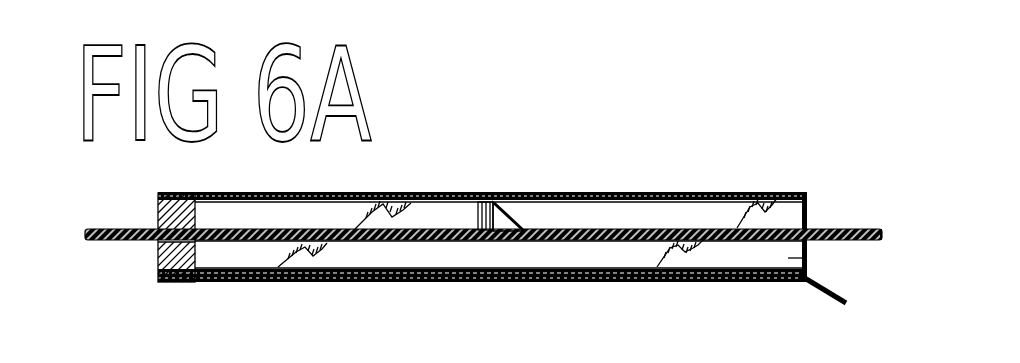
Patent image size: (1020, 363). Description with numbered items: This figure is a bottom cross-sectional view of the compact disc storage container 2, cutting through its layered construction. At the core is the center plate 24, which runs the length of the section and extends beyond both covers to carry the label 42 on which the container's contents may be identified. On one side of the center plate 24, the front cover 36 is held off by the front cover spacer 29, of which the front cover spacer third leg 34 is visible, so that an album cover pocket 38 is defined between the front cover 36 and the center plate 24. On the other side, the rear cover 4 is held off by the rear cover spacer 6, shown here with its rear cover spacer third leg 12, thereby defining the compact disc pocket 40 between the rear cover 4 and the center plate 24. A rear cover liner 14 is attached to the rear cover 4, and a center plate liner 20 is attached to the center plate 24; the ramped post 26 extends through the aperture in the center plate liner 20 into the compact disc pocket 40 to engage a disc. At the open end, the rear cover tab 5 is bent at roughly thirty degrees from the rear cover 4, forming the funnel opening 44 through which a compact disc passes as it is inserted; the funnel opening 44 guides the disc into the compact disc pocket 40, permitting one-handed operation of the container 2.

The compact disc storage container 2 is at (648, 105).
The rear cover 4 is at (573, 279).
The rear cover tab 5 is at (815, 290).
The rear cover spacer 6 is at (158, 256).
The rear cover spacer third leg 12 is at (272, 262).
The rear cover liner 14 is at (457, 267).
The center plate liner 20 is at (378, 244).
The center plate 24 is at (94, 229).
The ramped post 26 is at (478, 218).
The front cover spacer 29 is at (158, 213).
The front cover spacer third leg 34 is at (608, 215).
The front cover 36 is at (491, 197).
The album cover pocket 38 is at (788, 211).
The compact disc pocket 40 is at (806, 258).
The label 42 is at (848, 227).
The funnel opening 44 is at (832, 266).